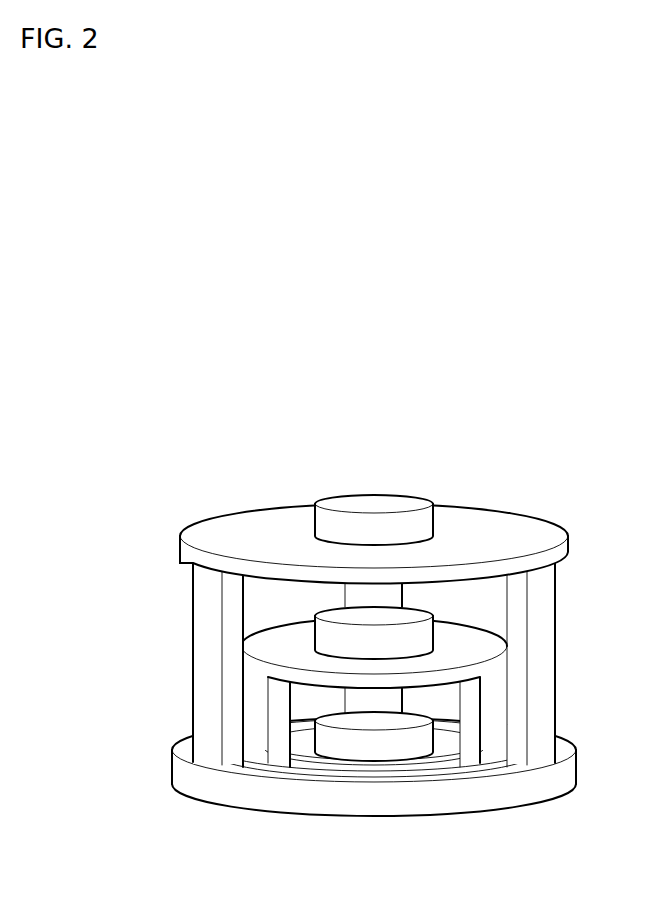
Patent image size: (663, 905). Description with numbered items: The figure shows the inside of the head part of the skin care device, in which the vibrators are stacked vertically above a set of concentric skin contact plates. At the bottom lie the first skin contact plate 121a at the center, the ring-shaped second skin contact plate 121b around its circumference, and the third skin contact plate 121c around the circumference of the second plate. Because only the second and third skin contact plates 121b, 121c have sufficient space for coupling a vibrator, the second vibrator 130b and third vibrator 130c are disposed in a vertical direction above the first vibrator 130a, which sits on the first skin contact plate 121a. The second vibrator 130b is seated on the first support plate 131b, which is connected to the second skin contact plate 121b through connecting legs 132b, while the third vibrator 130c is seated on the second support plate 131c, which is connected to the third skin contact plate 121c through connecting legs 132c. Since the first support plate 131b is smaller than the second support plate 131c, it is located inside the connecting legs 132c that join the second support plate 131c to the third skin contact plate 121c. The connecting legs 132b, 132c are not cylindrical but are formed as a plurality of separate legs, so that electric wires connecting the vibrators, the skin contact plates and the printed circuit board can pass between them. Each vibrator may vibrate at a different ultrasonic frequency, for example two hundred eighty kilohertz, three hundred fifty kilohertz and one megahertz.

The first skin contact plate 121a is at (347, 763).
The second skin contact plate 121b is at (298, 768).
The third skin contact plate 121c is at (228, 794).
The first vibrator 130a is at (413, 742).
The second vibrator 130b is at (412, 612).
The third vibrator 130c is at (375, 505).
The first support plate 131b is at (473, 645).
The second support plate 131c is at (523, 537).
The connecting leg 132b is at (492, 678).
The connecting leg 132c is at (541, 715).